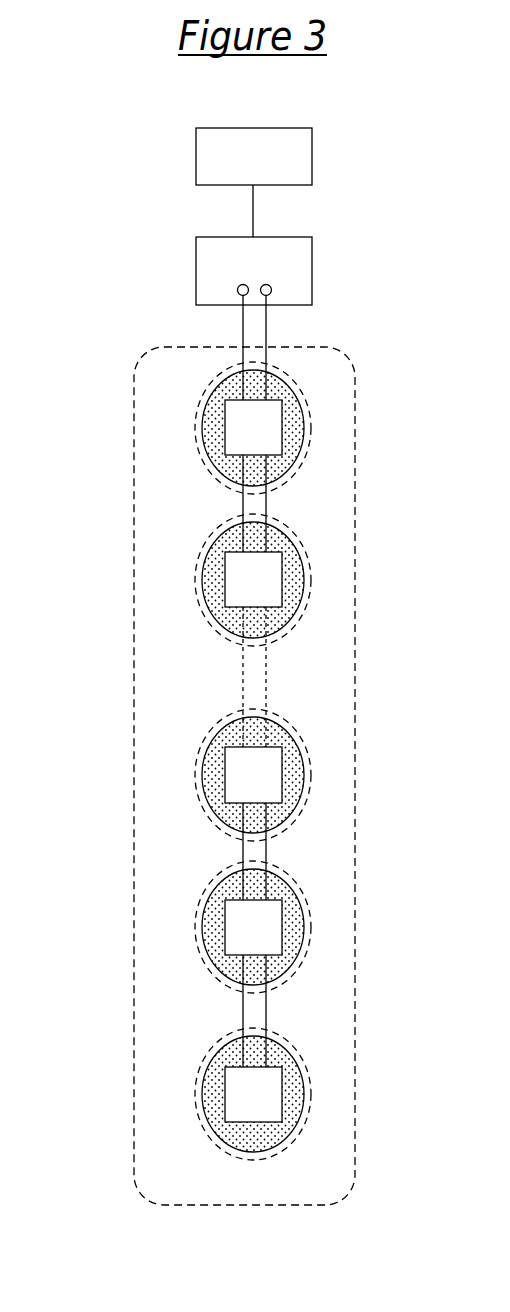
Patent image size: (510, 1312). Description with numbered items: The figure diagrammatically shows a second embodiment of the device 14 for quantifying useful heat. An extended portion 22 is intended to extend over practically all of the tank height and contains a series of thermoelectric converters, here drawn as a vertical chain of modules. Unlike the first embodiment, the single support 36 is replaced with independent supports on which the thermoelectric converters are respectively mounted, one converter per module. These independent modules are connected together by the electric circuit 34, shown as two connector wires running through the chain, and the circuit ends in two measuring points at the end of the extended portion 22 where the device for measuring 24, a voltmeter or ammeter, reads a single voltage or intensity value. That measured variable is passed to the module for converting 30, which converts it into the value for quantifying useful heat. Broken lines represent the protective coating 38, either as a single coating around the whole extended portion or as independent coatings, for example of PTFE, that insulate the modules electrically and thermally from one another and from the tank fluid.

The device for quantifying useful heat 14 is at (103, 183).
The extended portion 22 is at (103, 422).
The device for measuring 24 is at (317, 267).
The module for converting 30 is at (254, 156).
The electric circuit 34 is at (267, 500).
The support 36 is at (95, 1122).
The protective coating 38 is at (133, 723).